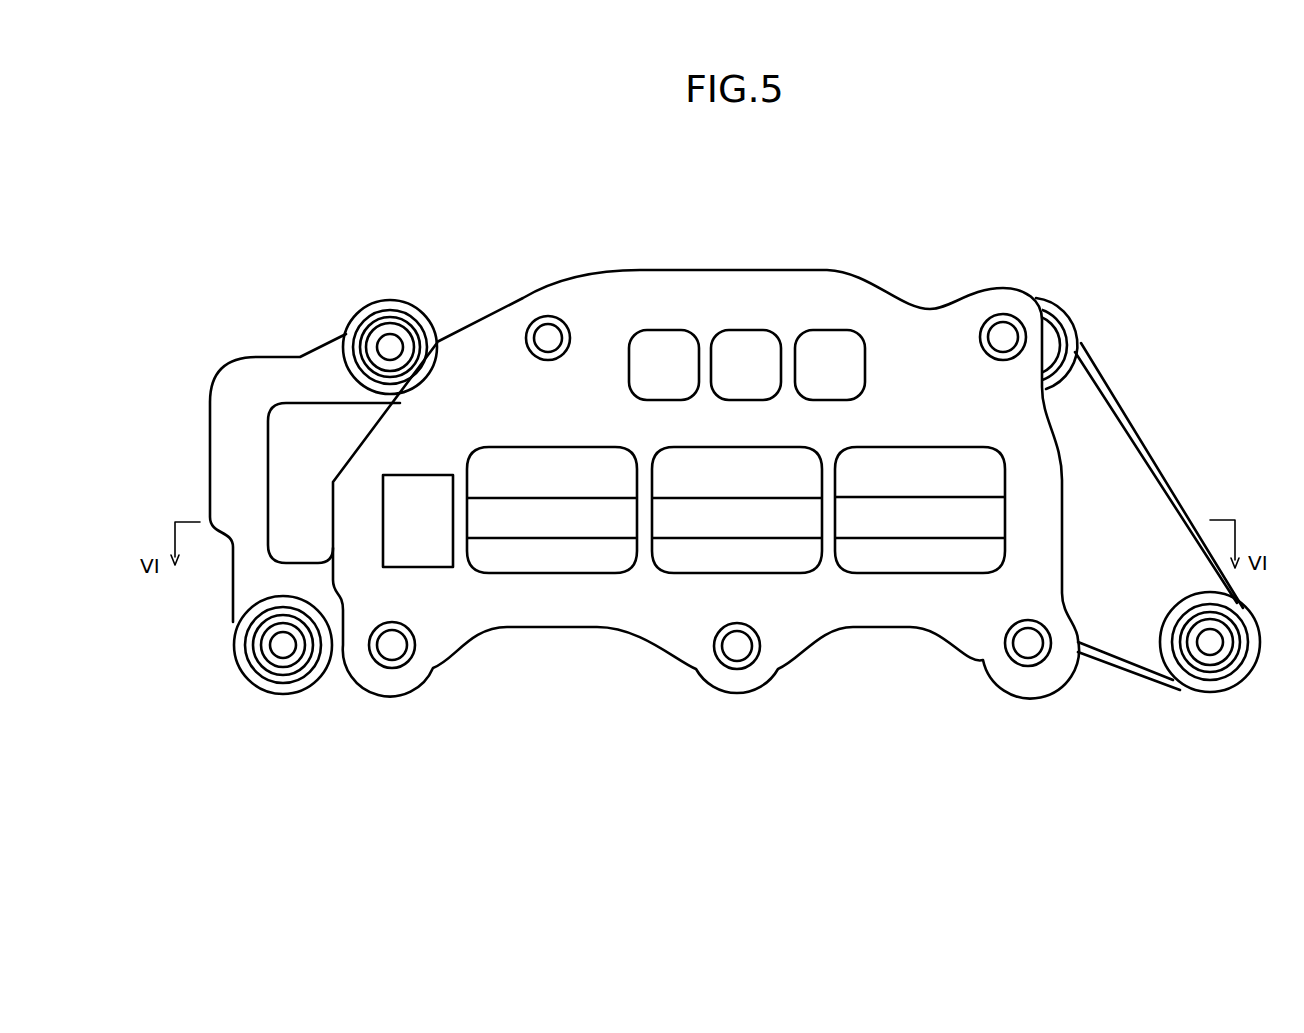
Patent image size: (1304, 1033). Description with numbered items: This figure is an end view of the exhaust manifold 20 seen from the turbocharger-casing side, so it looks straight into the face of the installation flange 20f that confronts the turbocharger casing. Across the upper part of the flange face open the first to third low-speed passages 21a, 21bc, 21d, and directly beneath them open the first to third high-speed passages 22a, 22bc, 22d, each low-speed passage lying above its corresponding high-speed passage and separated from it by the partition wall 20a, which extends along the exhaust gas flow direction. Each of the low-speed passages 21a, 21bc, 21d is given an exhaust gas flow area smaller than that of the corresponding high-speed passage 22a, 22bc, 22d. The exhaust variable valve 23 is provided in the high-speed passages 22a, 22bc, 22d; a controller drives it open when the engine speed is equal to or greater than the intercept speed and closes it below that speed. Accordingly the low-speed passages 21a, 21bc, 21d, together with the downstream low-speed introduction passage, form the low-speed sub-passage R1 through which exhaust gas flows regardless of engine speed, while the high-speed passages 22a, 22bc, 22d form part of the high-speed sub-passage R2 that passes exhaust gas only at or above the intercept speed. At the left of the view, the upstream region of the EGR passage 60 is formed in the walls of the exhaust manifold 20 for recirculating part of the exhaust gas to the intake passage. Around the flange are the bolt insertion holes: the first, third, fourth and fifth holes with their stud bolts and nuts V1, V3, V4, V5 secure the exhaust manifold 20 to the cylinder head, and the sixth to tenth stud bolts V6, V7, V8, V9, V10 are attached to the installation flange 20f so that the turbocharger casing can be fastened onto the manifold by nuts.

The exhaust manifold 20 is at (922, 337).
The partition wall 20a is at (805, 430).
The installation flange 20f is at (598, 607).
The first low-speed passage 21a is at (650, 347).
The second low-speed passage 21bc is at (747, 347).
The third low-speed passage 21d is at (838, 347).
The first high-speed passage 22a is at (507, 447).
The second high-speed passage 22bc is at (777, 573).
The third high-speed passage 22d is at (983, 470).
The exhaust variable valve 23 is at (520, 557).
The EGR passage 60 is at (405, 474).
The first bolt insertion hole and stud bolt and nut V1 is at (1210, 645).
The third bolt insertion hole and stud bolt and nut V3 is at (283, 645).
The fourth bolt insertion hole and stud bolt and nut V4 is at (1060, 330).
The fifth bolt insertion hole and stud bolt and nut V5 is at (393, 348).
The sixth bolt insertion hole and stud bolt and nut V6 is at (548, 337).
The seventh bolt insertion hole and stud bolt and nut V7 is at (1003, 337).
The eighth bolt insertion hole and stud bolt and nut V8 is at (392, 646).
The ninth bolt insertion hole and stud bolt and nut V9 is at (735, 647).
The tenth bolt insertion hole and stud bolt and nut V10 is at (1028, 645).
The low-speed sub-passage R1 is at (792, 209).
The high-speed sub-passage R2 is at (813, 583).